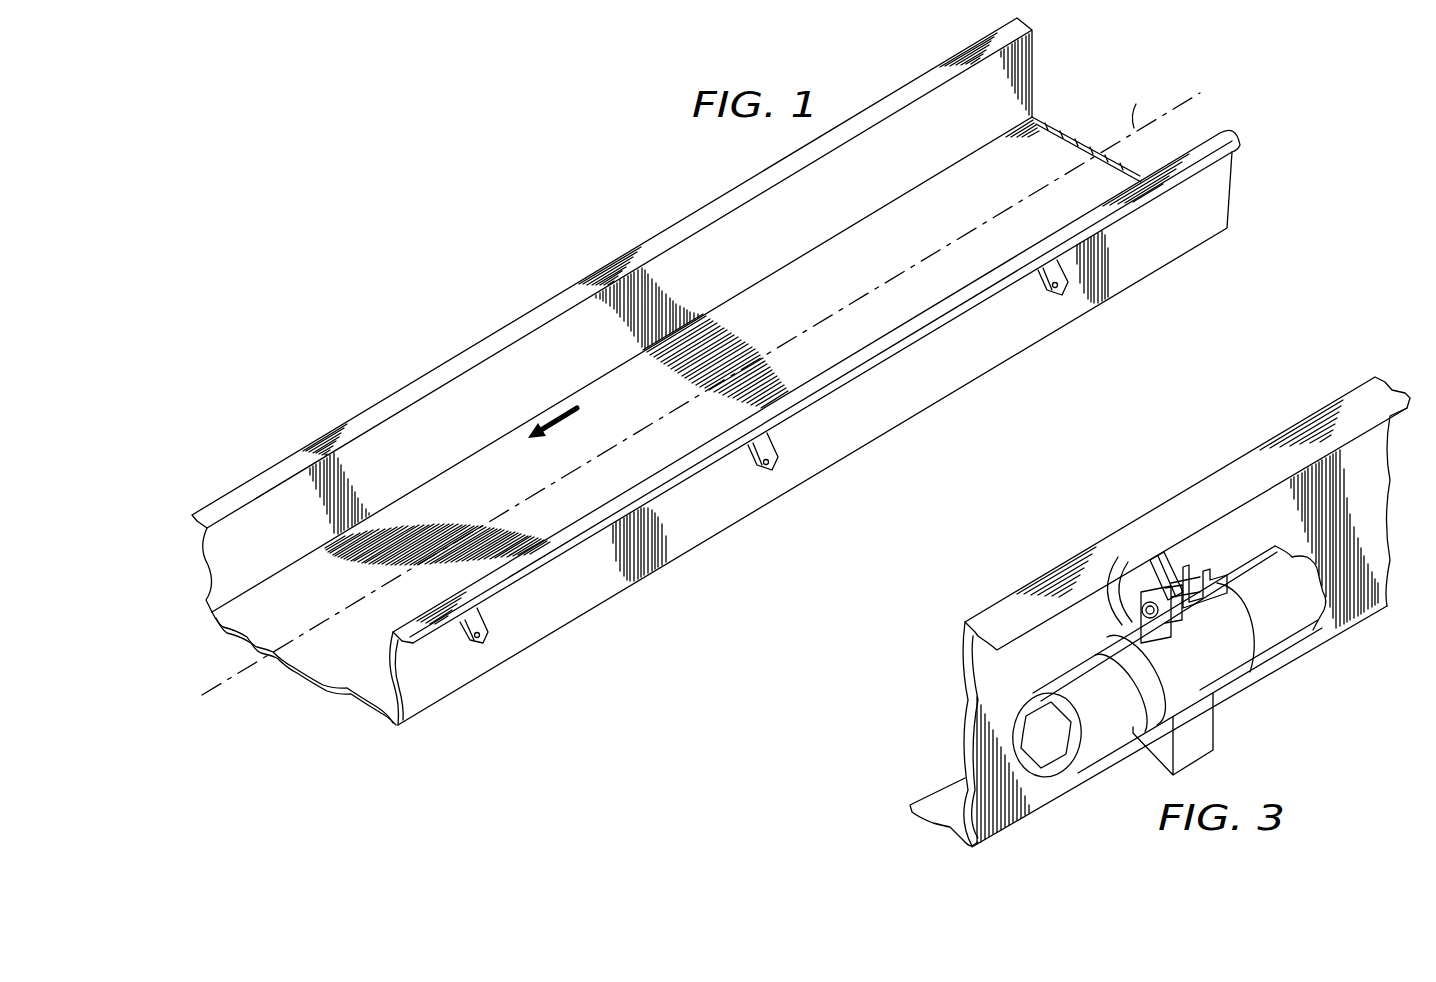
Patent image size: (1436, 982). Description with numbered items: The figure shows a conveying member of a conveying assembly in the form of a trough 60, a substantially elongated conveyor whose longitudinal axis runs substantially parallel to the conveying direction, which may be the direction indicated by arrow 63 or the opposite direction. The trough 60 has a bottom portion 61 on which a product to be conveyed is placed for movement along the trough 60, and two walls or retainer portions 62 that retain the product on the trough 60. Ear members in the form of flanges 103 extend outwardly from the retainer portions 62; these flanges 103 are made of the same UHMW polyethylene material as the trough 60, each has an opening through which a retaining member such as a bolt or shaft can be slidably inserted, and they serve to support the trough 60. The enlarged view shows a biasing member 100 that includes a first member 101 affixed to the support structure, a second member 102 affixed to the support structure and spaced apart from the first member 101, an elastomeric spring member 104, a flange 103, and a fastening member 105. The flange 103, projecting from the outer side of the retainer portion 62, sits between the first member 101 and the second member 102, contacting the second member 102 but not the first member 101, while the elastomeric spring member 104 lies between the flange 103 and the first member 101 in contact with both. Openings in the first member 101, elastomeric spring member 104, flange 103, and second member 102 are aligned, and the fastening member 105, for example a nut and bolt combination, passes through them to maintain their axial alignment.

In FIG. 1, the trough 60 is at (606, 230).
In FIG. 1, the bottom portion 61 is at (348, 681).
In FIG. 1, the retainer portion 62 is at (252, 522).
In FIG. 3, the retainer portion 62 is at (1160, 612).
In FIG. 1, the arrow 63 is at (560, 416).
In FIG. 1, the flange 103 is at (470, 630).
In FIG. 3, the flange 103 is at (1165, 565).
In FIG. 3, the biasing member 100 is at (1236, 707).
In FIG. 3, the first member 101 is at (1220, 606).
In FIG. 3, the second member 102 is at (1151, 658).
In FIG. 3, the elastomeric spring member 104 is at (1192, 620).
In FIG. 3, the fastening member 105 is at (1140, 602).